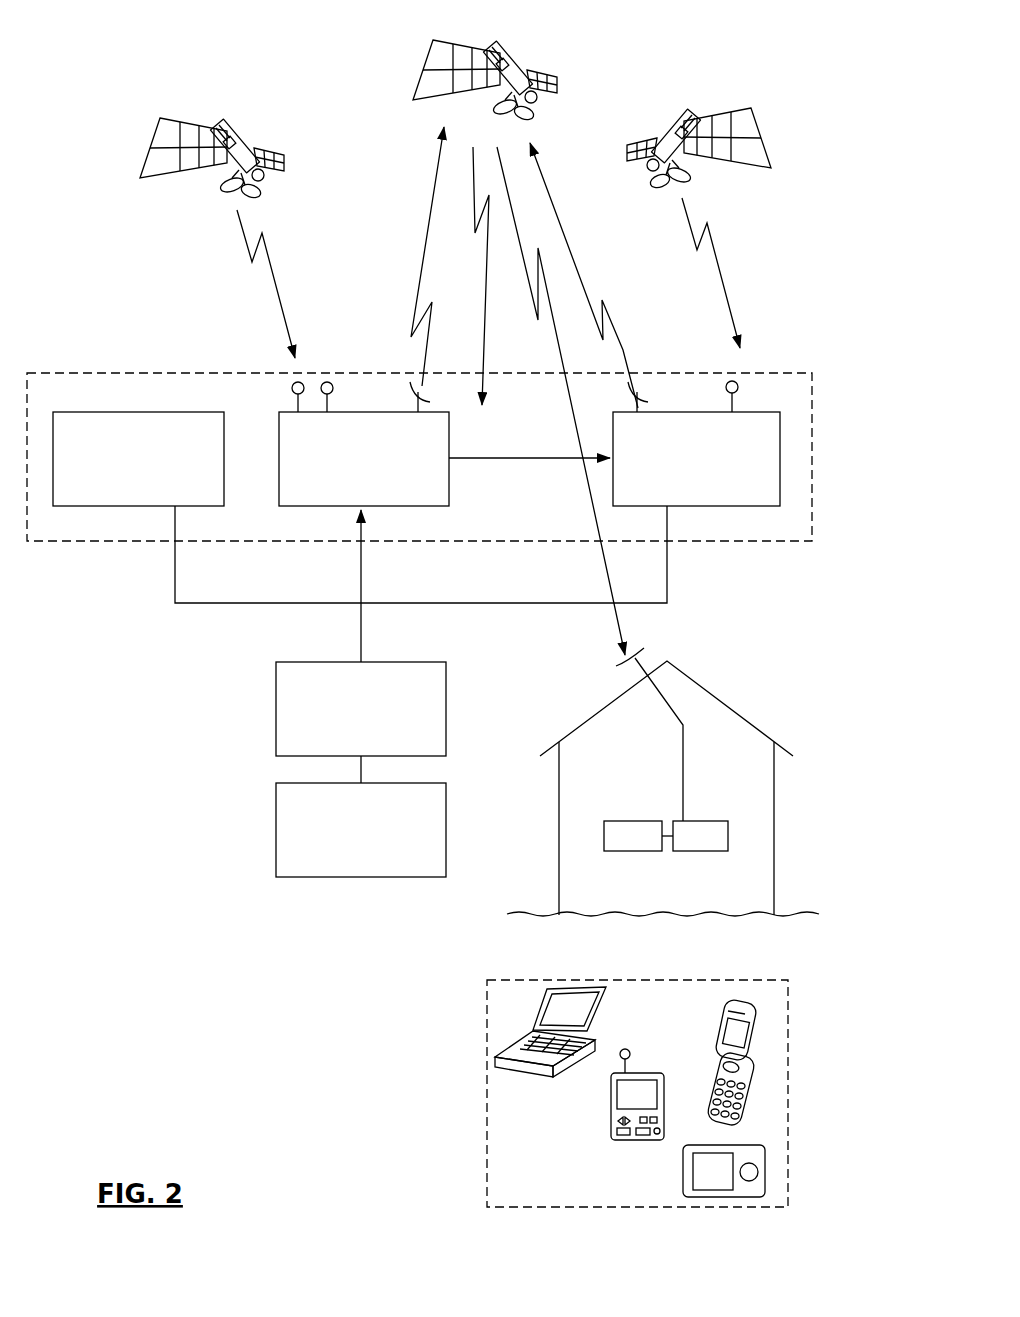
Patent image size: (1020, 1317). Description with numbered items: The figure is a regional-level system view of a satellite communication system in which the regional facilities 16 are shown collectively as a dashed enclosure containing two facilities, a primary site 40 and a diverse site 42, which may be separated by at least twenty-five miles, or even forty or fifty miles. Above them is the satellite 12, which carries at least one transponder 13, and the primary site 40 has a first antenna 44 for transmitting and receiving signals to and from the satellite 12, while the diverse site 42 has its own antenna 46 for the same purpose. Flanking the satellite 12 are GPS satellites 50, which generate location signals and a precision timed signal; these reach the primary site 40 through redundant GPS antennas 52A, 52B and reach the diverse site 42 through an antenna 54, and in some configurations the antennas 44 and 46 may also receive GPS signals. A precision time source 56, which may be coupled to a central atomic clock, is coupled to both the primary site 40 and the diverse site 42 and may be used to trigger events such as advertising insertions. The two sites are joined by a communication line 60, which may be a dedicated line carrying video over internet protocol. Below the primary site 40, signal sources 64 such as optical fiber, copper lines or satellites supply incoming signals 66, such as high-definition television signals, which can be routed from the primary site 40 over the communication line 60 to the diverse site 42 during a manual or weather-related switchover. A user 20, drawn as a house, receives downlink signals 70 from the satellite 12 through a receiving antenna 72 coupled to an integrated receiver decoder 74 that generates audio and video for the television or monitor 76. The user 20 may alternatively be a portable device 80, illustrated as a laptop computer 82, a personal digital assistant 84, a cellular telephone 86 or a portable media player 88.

The satellite 12 is at (484, 67).
The transponder 13 is at (510, 65).
The regional facilities 16 is at (72, 542).
The user 20 is at (670, 772).
The primary site 40 is at (450, 437).
The diverse site 42 is at (722, 507).
The first antenna 44 is at (414, 390).
The antenna 46 is at (636, 386).
The GPS satellites 50 is at (236, 118).
The GPS antenna 52A is at (297, 400).
The GPS antenna 52B is at (327, 380).
The antenna 54 is at (738, 386).
The precision time source 56 is at (100, 412).
The communication line 60 is at (497, 461).
The signal sources 64 is at (276, 828).
The incoming signals 66 is at (276, 707).
The downlink signals 70 is at (562, 348).
The receiving antenna 72 is at (643, 653).
The integrated receiver decoder 74 is at (699, 821).
The television or monitor 76 is at (618, 821).
The portable device 80 is at (422, 1093).
The laptop computer 82 is at (524, 1073).
The personal digital assistant 84 is at (655, 1074).
The cellular telephone 86 is at (718, 1047).
The portable media player 88 is at (765, 1152).